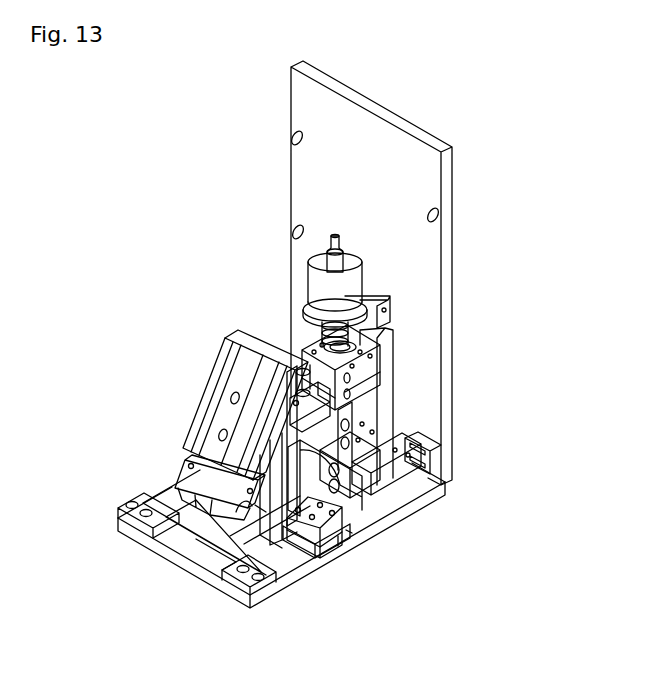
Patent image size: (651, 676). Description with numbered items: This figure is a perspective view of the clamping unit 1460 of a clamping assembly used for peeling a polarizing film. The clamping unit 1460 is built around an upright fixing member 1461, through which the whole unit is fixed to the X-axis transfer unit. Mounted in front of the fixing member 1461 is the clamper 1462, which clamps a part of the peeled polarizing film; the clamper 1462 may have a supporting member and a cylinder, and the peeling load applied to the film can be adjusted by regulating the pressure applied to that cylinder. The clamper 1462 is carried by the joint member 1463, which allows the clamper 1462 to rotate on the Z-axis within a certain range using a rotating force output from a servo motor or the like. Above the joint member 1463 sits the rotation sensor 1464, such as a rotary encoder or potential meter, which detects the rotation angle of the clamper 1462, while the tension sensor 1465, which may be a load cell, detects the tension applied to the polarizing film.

The clamping unit 1460 is at (109, 187).
The fixing member 1461 is at (447, 315).
The clamper 1462 is at (170, 417).
The joint member 1463 is at (363, 430).
The rotation sensor 1464 is at (318, 290).
The tension sensor 1465 is at (292, 490).